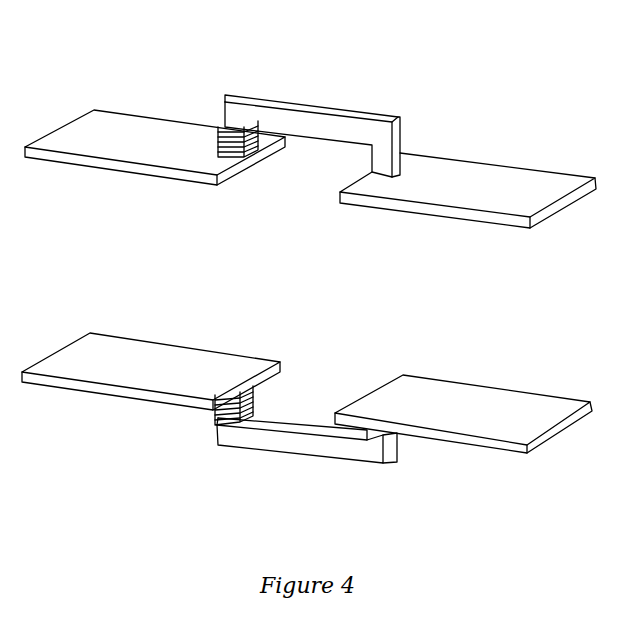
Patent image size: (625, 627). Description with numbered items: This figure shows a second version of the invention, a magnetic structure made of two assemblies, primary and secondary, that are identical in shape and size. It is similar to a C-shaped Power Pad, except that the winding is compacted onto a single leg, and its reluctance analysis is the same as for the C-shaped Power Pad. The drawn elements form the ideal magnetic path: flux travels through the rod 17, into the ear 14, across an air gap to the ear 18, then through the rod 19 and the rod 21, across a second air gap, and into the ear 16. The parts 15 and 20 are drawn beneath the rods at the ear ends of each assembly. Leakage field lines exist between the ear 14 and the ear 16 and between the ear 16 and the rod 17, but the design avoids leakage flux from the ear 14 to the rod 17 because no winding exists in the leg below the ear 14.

The ear 14 is at (472, 406).
The spring 15 is at (209, 427).
The ear 16 is at (135, 356).
The rod 17 is at (295, 453).
The ear 18 is at (490, 178).
The rod 19 is at (329, 117).
The spring 20 is at (218, 116).
The rod 21 is at (122, 122).